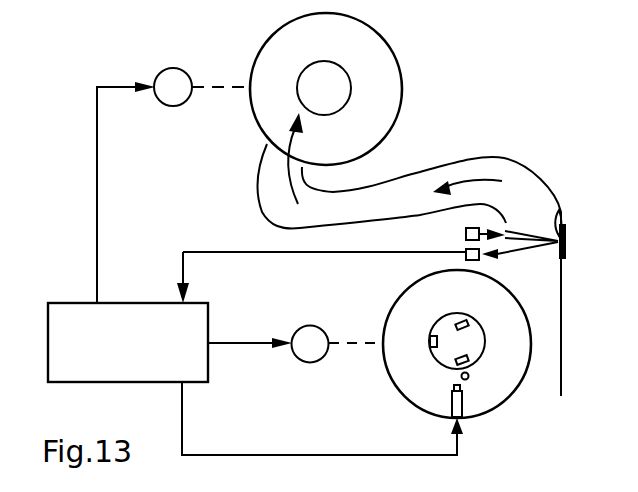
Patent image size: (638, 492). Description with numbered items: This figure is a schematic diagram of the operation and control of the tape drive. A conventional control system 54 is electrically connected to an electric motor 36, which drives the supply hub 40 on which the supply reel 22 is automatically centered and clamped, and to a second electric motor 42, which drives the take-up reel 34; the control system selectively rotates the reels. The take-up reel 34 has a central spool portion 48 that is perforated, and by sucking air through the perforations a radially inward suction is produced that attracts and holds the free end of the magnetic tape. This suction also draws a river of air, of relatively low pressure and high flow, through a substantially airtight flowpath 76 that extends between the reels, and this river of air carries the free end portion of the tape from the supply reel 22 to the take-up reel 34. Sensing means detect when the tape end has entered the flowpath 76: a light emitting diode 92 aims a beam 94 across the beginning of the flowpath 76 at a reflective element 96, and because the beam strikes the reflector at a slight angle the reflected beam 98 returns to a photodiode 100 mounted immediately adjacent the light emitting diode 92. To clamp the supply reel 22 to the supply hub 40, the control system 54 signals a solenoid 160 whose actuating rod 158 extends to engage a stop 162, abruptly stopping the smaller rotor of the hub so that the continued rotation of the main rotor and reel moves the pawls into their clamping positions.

The supply reel 22 is at (485, 402).
The take-up reel 34 is at (381, 50).
The electric motor 36 is at (310, 367).
The supply hub 40 is at (473, 344).
The second electric motor 42 is at (167, 67).
The central spool portion 48 is at (306, 67).
The control system 54 is at (81, 302).
The flowpath 76 is at (390, 198).
The light emitting diode 92 is at (465, 234).
The beam 94 is at (510, 240).
The reflective element 96 is at (565, 210).
The reflected beam 98 is at (535, 252).
The photodiode 100 is at (465, 254).
The actuating rod 158 is at (452, 388).
The solenoid 160 is at (450, 421).
The stop 162 is at (468, 378).